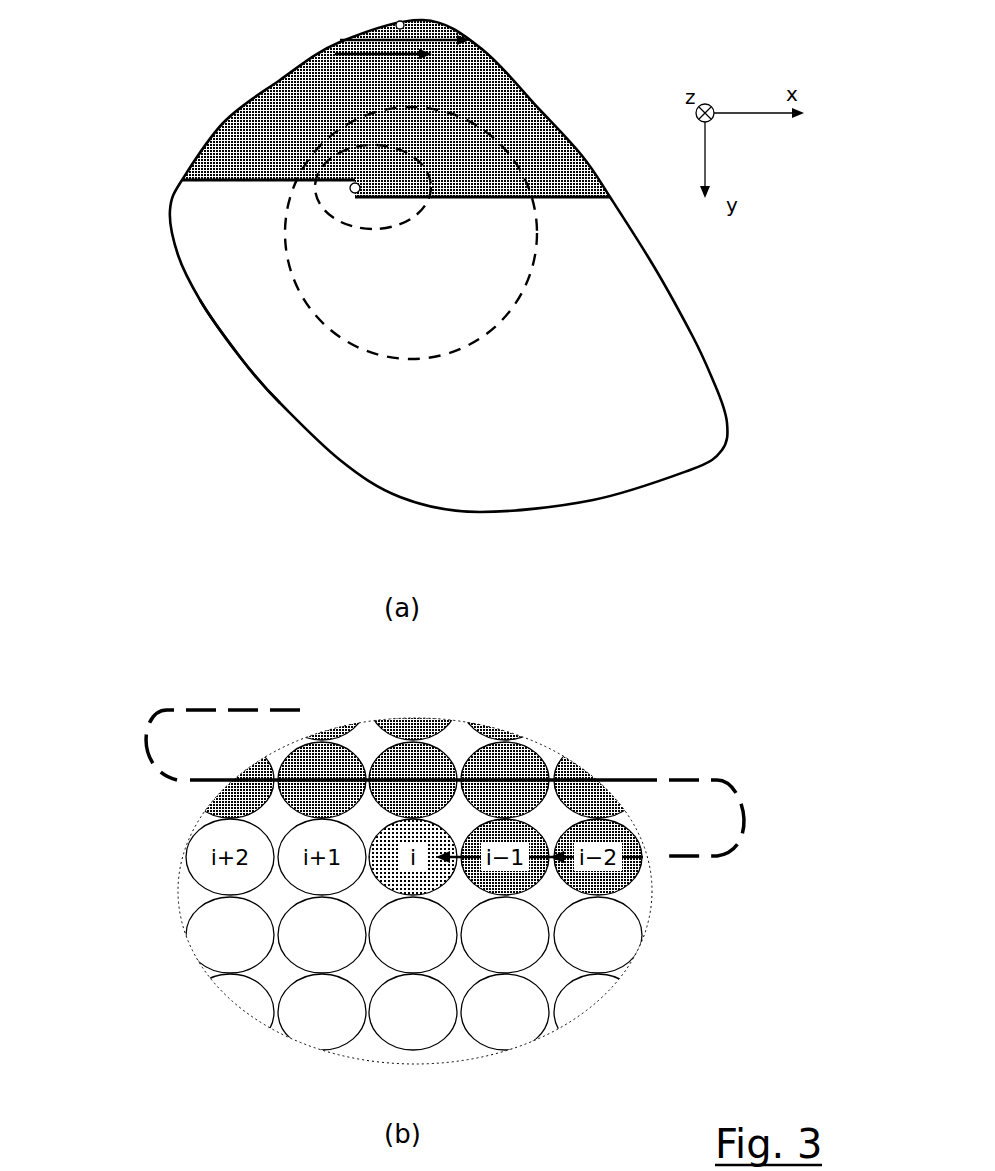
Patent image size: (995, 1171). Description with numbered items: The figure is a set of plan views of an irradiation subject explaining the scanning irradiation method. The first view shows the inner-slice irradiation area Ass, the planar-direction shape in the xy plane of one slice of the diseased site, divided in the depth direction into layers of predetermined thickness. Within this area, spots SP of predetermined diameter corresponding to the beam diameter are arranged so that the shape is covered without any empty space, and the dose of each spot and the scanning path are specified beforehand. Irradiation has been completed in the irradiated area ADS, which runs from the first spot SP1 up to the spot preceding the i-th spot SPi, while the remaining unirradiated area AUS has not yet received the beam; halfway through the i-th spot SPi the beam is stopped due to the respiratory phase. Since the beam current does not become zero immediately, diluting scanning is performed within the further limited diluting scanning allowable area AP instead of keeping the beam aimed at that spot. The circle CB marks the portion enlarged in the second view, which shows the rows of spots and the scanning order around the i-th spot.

The first spot SP1 is at (395, 27).
The irradiated area ADS is at (497, 92).
The unirradiated area AUS is at (623, 310).
The i-th spot SPi is at (351, 190).
The circle CB is at (352, 228).
The inner-slice irradiation area Ass is at (237, 357).
The diluting scanning allowable area AP is at (443, 357).
The spot SP is at (590, 948).